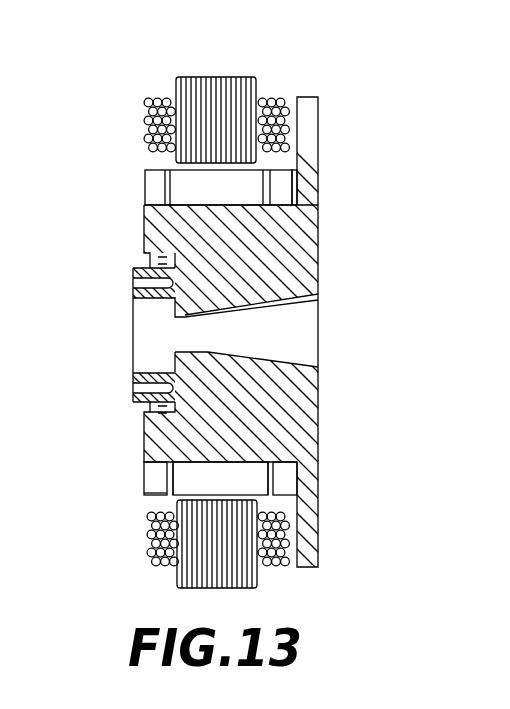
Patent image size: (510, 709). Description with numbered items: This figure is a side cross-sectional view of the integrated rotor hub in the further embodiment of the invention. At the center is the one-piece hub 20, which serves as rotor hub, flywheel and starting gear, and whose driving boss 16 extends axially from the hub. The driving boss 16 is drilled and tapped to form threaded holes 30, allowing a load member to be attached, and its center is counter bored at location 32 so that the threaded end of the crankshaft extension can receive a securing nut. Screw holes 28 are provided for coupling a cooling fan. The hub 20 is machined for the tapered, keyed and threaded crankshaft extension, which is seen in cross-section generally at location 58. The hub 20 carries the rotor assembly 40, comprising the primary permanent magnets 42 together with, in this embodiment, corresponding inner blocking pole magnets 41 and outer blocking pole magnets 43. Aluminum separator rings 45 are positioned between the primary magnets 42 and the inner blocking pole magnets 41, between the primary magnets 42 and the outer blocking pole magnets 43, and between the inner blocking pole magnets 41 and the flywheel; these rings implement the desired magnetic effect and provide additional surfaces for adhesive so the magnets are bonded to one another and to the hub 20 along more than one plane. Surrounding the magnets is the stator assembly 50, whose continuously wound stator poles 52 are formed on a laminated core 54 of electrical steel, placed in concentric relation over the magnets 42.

The driving boss 16 is at (138, 265).
The hub 20 is at (300, 395).
The screw holes 28 is at (145, 408).
The threaded holes 30 is at (132, 388).
The counter bored location 32 is at (143, 338).
The rotor assembly 40 is at (333, 258).
The inner blocking pole magnets 41 is at (294, 481).
The permanent magnets 42 is at (180, 180).
The outer blocking pole magnets 43 is at (150, 470).
The aluminum separator rings 45 is at (295, 160).
The stator assembly 50 is at (197, 86).
The stator poles 52 is at (148, 112).
The laminated core 54 is at (200, 77).
The cross-section location 58 is at (300, 323).